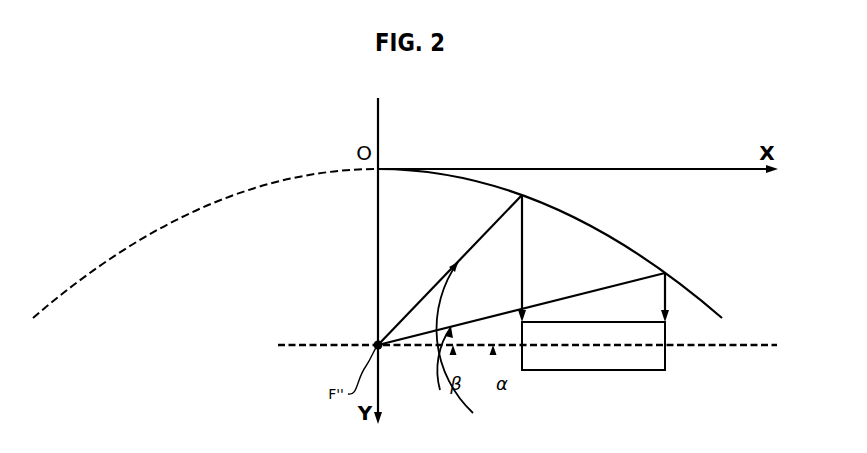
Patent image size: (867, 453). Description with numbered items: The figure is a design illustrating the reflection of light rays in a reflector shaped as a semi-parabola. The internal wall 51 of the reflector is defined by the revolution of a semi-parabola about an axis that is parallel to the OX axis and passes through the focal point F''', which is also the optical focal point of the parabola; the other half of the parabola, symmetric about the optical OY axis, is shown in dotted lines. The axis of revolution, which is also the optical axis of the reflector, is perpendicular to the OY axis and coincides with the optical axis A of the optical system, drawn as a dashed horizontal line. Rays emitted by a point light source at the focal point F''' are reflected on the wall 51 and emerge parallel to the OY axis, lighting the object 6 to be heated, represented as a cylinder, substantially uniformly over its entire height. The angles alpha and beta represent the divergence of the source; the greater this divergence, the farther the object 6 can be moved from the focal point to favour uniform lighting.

The internal wall 51 is at (470, 181).
The object to be heated 6 is at (593, 357).
The optical axis A is at (750, 341).